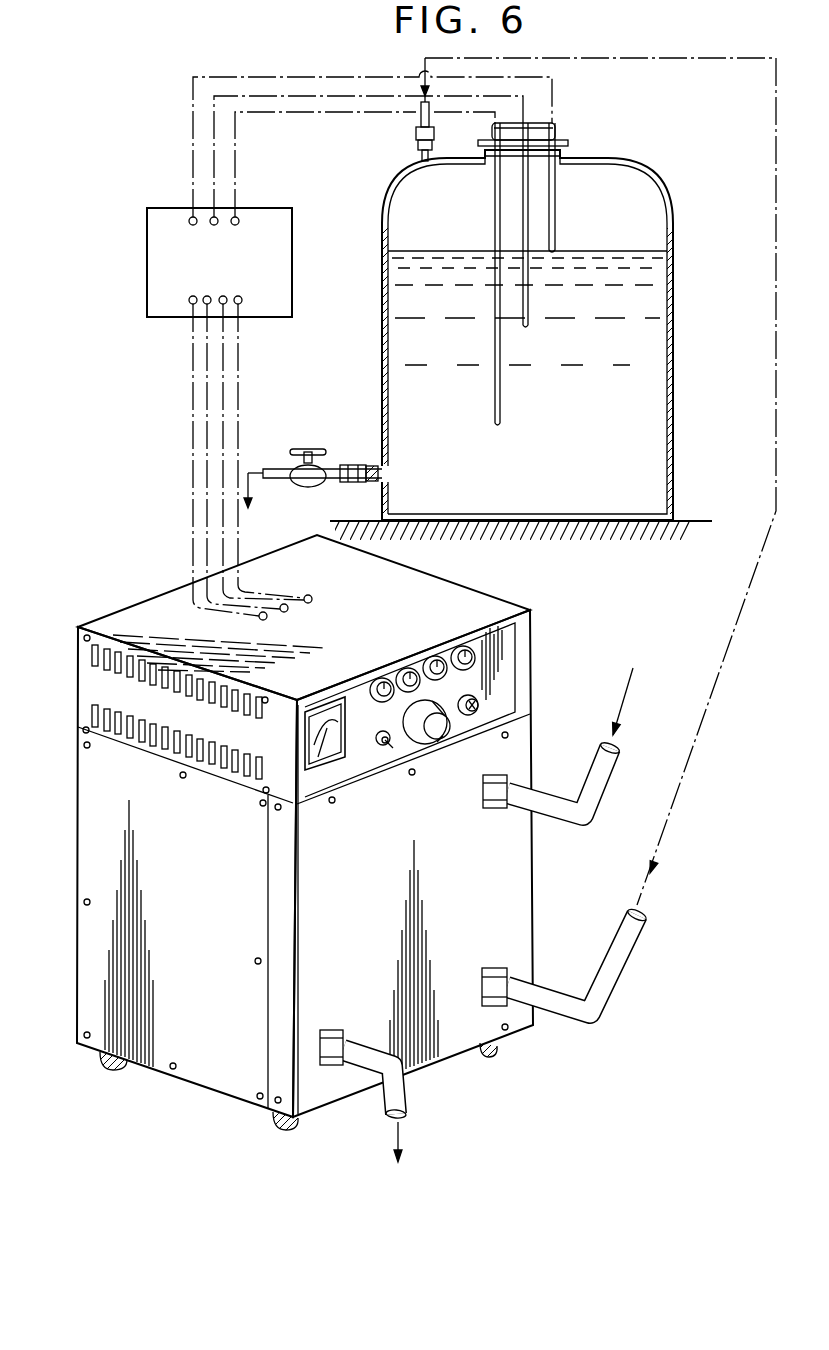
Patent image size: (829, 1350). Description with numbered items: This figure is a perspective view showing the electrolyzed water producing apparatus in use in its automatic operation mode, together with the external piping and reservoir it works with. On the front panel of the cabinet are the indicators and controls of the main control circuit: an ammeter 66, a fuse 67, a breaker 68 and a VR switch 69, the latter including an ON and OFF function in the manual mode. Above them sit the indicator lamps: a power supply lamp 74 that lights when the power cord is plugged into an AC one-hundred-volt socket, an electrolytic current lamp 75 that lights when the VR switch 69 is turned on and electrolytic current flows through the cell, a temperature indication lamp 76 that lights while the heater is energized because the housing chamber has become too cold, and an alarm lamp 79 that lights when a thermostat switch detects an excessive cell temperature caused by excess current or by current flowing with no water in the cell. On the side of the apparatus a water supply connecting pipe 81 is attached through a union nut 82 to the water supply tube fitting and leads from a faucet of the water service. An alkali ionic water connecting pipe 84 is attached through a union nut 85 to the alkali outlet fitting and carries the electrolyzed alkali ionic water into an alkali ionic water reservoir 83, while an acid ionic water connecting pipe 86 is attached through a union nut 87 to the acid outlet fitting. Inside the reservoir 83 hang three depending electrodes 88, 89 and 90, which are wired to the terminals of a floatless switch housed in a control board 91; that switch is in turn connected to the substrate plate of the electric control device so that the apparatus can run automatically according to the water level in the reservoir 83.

The ammeter 66 is at (338, 770).
The fuse 67 is at (470, 716).
The breaker 68 is at (388, 746).
The VR switch 69 is at (440, 746).
The power supply lamp 74 is at (460, 647).
The electrolytic current lamp 75 is at (403, 670).
The temperature indication lamp 76 is at (431, 657).
The alarm lamp 79 is at (378, 683).
The water supply connecting pipe 81 is at (616, 784).
The union nut 82 is at (488, 810).
The alkali ionic water reservoir 83 is at (662, 196).
The alkali ionic water connecting pipe 84 is at (632, 970).
The union nut 85 is at (492, 968).
The acid ionic water connecting pipe 86 is at (409, 1092).
The union nut 87 is at (338, 1032).
The depending electrode 88 is at (500, 398).
The depending electrode 89 is at (529, 303).
The depending electrode 90 is at (556, 212).
The control board 91 is at (283, 208).